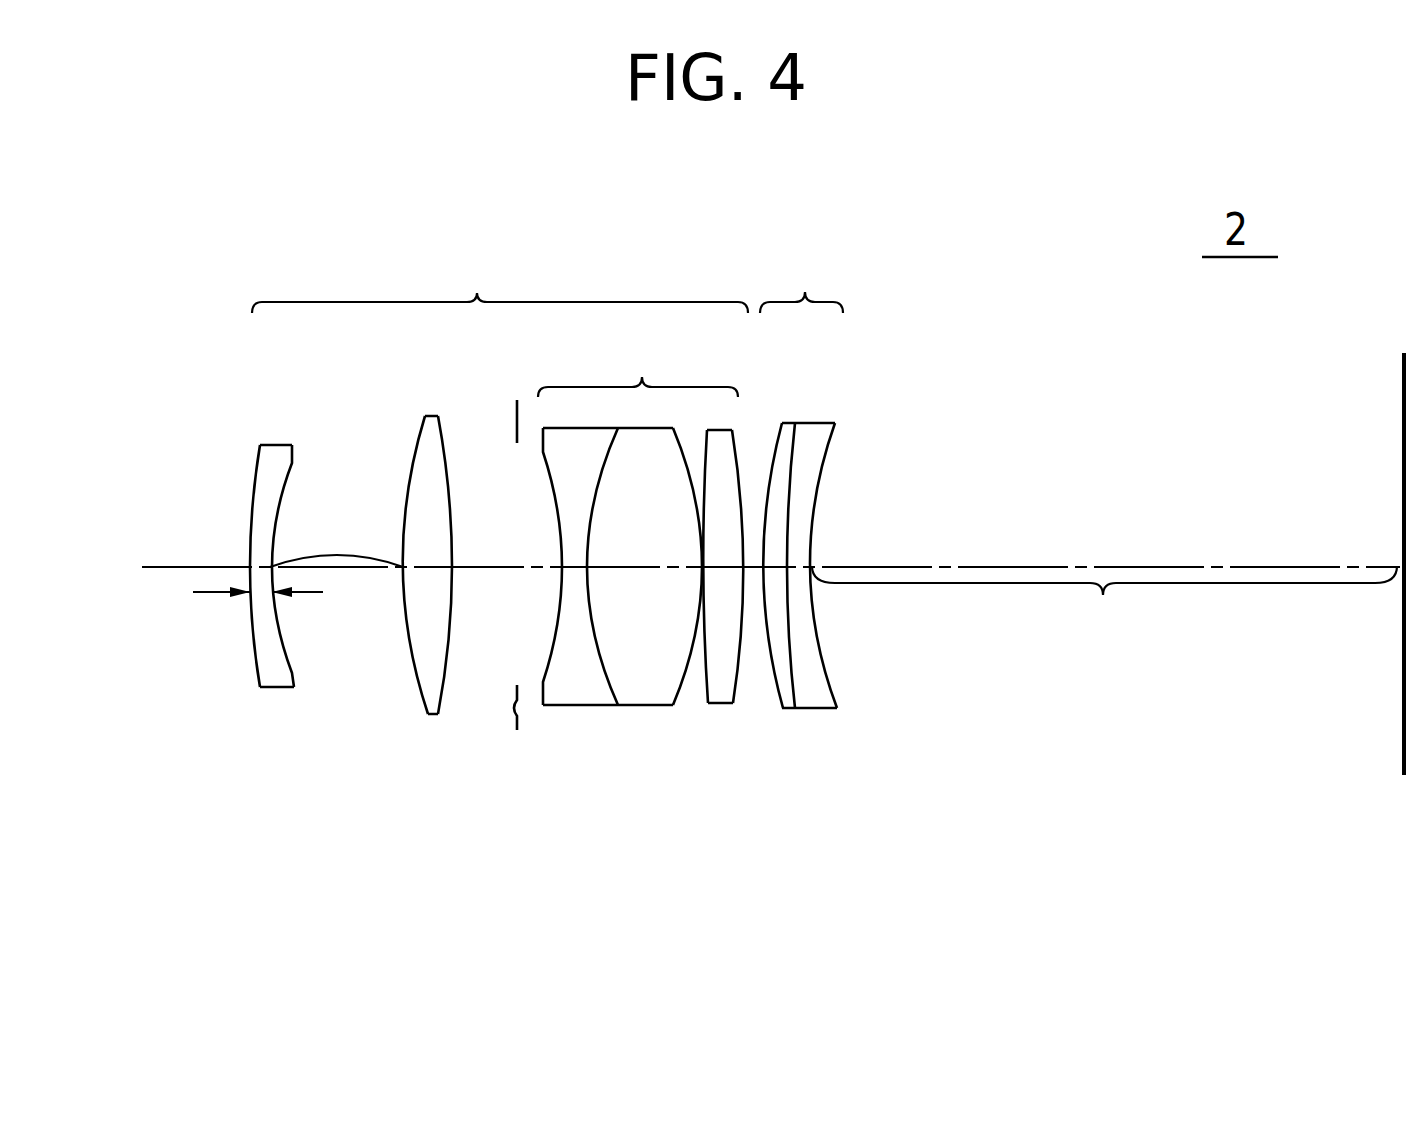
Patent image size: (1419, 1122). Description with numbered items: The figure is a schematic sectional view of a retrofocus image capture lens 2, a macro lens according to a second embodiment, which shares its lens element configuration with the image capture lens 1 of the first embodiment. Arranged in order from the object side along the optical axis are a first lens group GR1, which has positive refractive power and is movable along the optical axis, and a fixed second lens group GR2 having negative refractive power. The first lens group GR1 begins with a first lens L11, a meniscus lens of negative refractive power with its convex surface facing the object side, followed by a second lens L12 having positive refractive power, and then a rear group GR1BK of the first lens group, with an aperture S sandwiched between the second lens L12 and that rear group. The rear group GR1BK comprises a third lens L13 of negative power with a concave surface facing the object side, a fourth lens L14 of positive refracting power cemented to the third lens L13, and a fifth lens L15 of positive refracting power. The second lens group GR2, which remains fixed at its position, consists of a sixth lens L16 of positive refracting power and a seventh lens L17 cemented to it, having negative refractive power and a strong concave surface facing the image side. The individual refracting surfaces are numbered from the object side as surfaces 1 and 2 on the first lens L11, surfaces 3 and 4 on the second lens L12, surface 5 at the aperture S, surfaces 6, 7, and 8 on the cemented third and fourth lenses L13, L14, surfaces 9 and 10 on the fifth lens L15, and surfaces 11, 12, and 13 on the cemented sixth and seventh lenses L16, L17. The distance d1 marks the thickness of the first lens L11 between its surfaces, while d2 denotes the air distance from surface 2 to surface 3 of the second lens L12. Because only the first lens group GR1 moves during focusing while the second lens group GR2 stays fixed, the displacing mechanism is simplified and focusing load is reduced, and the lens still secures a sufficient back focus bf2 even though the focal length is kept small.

The image capture lens 1 is at (260, 684).
The retrofocus image capture lens 2 is at (275, 688).
The surface of the second lens 3 is at (425, 703).
The second surface of lens L12 4 is at (442, 703).
The aperture stop surface 5 is at (517, 730).
The first surface of lens L13 6 is at (543, 706).
The cemented surface between L13 and L14 7 is at (580, 705).
The image-side surface of lens L14 8 is at (687, 635).
The first surface of lens L15 9 is at (710, 705).
The second surface of lens L15 10 is at (725, 703).
The first surface of lens L16 11 is at (778, 710).
The cemented surface between L16 and L17 12 is at (805, 712).
The image-side surface of lens L17 13 is at (833, 678).
The first lens L11 is at (275, 662).
The second lens L12 is at (432, 663).
The third lens L13 is at (600, 661).
The fourth lens L14 is at (663, 661).
The fifth lens L15 is at (735, 662).
The sixth lens L16 is at (811, 659).
The seventh lens L17 is at (909, 640).
The first lens group GR1 is at (500, 271).
The second lens group GR2 is at (805, 271).
The rear group of the first lens group GR1BK is at (638, 360).
The aperture S is at (511, 594).
The distance between lens surfaces of the first lens d1 is at (235, 596).
The distance between surface 2 and surface 3 d2 is at (336, 534).
The back focus bf2 is at (1104, 607).